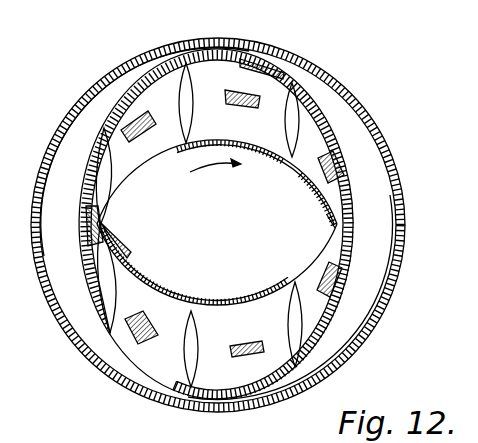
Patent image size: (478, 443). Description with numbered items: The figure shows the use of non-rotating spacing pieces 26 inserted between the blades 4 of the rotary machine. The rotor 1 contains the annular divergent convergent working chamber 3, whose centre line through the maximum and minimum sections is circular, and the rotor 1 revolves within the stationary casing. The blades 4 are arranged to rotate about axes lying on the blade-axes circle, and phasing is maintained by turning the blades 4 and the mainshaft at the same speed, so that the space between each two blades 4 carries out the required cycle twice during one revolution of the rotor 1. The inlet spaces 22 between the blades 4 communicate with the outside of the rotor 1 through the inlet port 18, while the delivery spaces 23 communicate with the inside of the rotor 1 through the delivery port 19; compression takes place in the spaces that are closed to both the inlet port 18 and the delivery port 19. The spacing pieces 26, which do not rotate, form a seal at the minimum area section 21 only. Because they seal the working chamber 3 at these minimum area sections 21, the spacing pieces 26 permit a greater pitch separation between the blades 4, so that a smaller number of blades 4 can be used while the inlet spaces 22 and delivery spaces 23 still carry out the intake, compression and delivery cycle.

The rotor 1 is at (182, 146).
The divergent convergent working chamber 3 is at (226, 67).
The blades 4 is at (293, 126).
The inlet port 18 is at (138, 352).
The delivery port 19 is at (124, 179).
The minimum area section 21 is at (102, 238).
The inlet spaces 22 is at (142, 165).
The delivery spaces 23 is at (312, 327).
The spacing pieces 26 is at (228, 105).